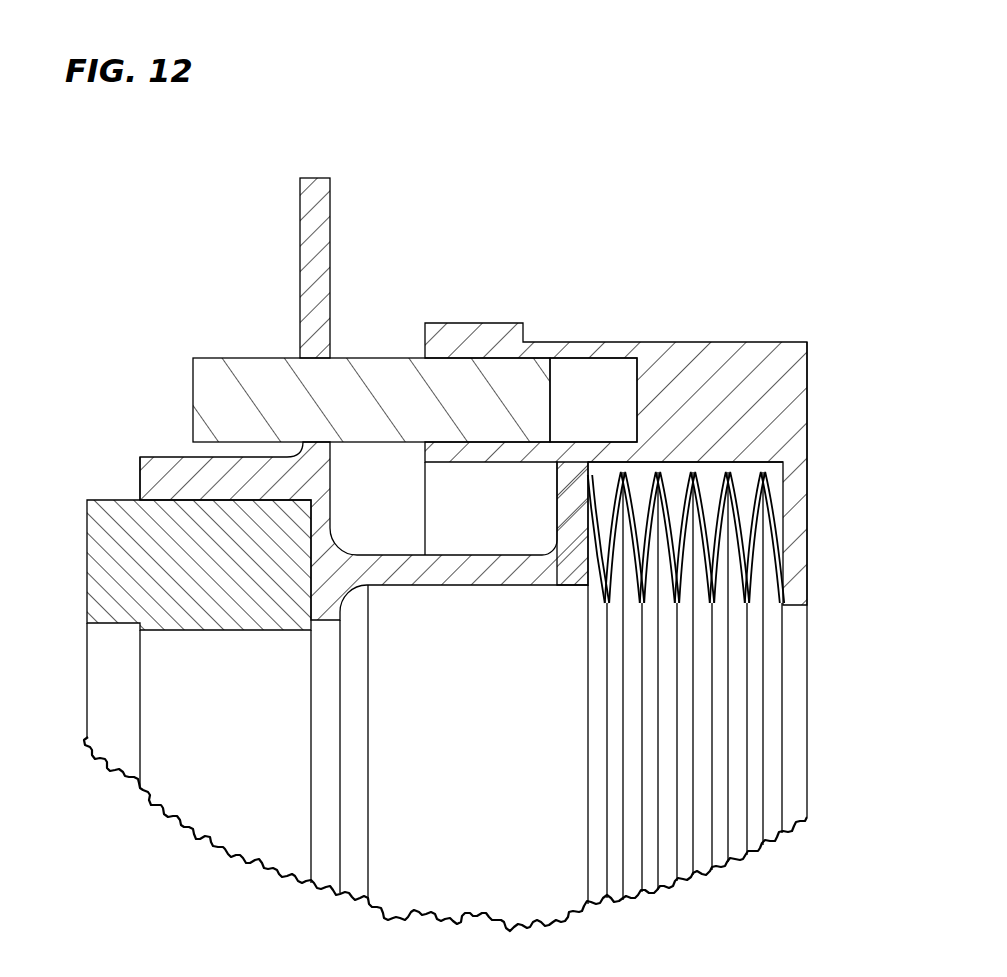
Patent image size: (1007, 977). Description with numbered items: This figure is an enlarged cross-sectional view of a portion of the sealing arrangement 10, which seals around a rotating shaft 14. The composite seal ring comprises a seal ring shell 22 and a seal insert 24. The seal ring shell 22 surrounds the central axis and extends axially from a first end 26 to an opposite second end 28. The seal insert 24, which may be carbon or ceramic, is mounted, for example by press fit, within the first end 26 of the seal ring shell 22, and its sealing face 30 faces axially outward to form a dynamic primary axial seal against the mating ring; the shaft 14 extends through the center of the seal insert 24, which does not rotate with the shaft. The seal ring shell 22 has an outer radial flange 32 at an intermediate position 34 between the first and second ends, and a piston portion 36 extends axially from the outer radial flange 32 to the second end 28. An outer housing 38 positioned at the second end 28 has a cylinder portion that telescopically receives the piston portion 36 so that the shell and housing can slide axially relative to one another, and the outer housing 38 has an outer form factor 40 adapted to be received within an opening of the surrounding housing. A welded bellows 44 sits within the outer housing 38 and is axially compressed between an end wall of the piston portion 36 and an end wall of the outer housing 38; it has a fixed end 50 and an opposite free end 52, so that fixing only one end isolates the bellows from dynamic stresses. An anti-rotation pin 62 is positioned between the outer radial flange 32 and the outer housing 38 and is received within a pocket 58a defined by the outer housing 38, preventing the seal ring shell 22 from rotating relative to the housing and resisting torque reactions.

The sealing arrangement 10 is at (622, 150).
The shaft 14 is at (218, 808).
The seal ring shell 22 is at (171, 450).
The seal insert 24 is at (70, 557).
The first end 26 is at (127, 488).
The second end 28 is at (585, 592).
The sealing face 30 is at (86, 583).
The outer radial flange 32 is at (331, 210).
The intermediate position 34 is at (292, 355).
The piston portion 36 is at (392, 540).
The outer housing 38 is at (700, 341).
The outer form factor 40 is at (818, 347).
The welded bellows 44 is at (773, 501).
The fixed end 50 is at (779, 614).
The free end 52 is at (600, 478).
The pocket 58a is at (590, 376).
The anti-rotation pin 62 is at (385, 377).